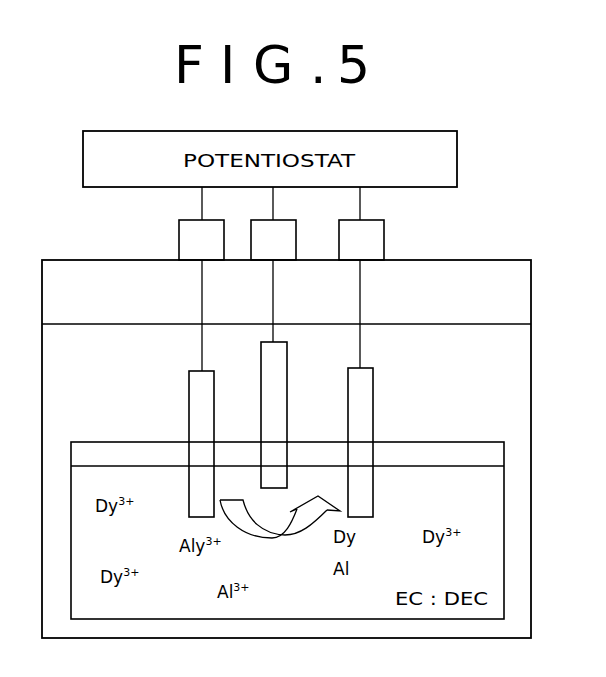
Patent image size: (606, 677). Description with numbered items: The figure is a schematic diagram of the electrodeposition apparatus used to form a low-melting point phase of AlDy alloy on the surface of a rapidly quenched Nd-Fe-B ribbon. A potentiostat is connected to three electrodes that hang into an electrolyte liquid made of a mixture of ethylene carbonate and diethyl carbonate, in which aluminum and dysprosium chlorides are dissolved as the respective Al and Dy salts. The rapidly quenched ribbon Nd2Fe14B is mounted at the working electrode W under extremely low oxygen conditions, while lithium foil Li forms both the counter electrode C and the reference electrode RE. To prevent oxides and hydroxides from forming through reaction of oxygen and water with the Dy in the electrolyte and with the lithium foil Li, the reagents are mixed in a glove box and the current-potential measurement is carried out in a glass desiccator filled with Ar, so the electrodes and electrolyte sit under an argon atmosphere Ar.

The counter electrode C is at (201, 279).
The reference electrode RE is at (273, 264).
The working electrode W is at (361, 277).
The argon Ar is at (286, 301).
The lithium foil Li is at (270, 362).
The rapidly quenched ribbon Nd2Fe14B is at (360, 410).